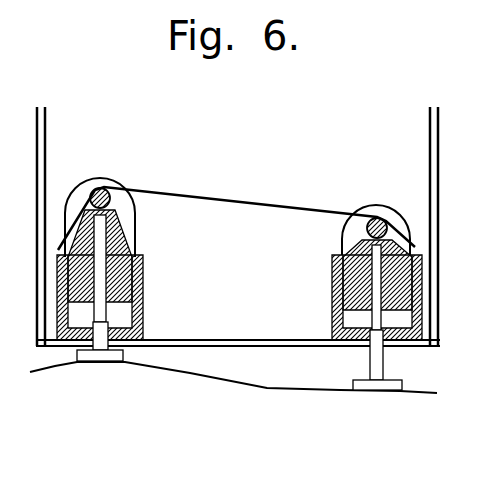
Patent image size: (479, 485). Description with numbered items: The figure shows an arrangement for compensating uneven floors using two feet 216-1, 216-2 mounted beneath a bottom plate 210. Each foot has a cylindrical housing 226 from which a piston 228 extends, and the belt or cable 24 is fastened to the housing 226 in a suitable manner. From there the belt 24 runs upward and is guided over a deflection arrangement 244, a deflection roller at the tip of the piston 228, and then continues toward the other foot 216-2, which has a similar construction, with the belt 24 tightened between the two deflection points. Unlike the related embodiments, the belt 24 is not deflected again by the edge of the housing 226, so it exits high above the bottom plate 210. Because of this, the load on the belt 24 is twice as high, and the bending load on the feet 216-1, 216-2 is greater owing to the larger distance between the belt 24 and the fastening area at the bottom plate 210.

The belt 24 is at (238, 203).
The deflection arrangement 244 is at (106, 190).
The piston 228 is at (133, 237).
The housing 226 is at (142, 287).
The foot 216-1 is at (102, 363).
The other foot 216-2 is at (377, 393).
The bottom plate 210 is at (277, 348).